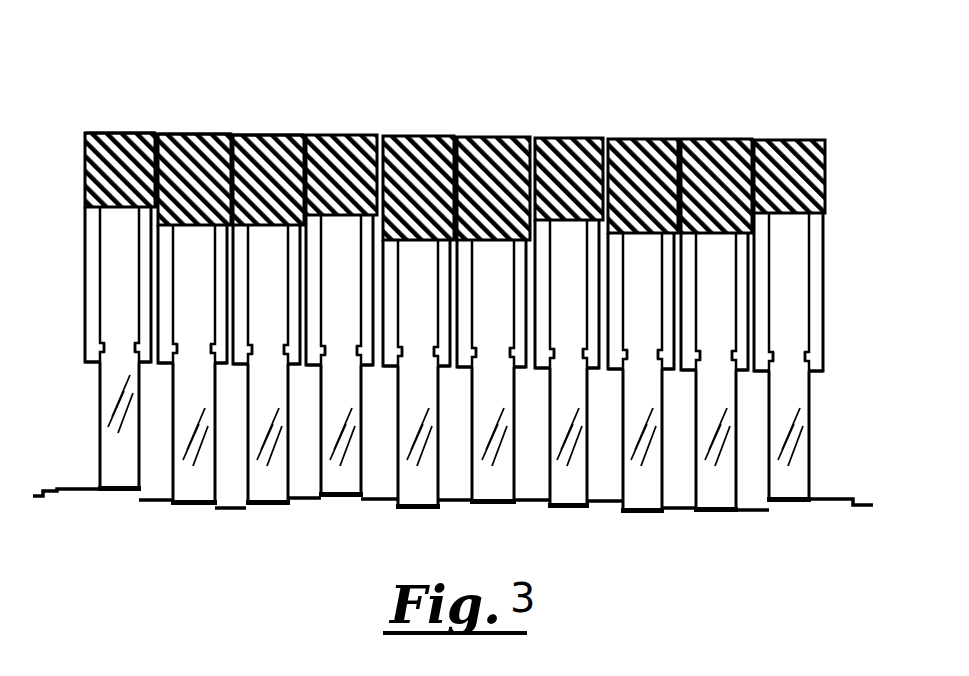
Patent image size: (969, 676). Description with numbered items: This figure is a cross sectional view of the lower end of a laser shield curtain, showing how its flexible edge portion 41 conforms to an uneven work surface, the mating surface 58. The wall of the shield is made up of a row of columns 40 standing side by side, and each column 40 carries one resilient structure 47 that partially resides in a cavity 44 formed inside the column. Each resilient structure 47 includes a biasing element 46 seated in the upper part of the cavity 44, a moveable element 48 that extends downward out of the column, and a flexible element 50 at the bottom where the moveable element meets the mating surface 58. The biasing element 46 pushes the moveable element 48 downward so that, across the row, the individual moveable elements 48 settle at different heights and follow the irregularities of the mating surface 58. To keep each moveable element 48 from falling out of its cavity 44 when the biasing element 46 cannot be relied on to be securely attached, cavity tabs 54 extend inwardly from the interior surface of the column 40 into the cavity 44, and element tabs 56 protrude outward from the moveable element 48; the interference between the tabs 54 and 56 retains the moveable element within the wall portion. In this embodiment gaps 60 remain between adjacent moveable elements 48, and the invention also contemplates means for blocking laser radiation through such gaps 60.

The flexible edge portion 41 is at (482, 87).
The biasing element 46 is at (826, 164).
The resilient structure 47 is at (239, 103).
The column 40 is at (823, 247).
The cavity 44 is at (814, 332).
The element tab 56 is at (818, 363).
The cavity tab 54 is at (816, 375).
The moveable element 48 is at (813, 433).
The gap 60 is at (608, 497).
The mating surface 58 is at (842, 502).
The flexible element 50 is at (95, 491).